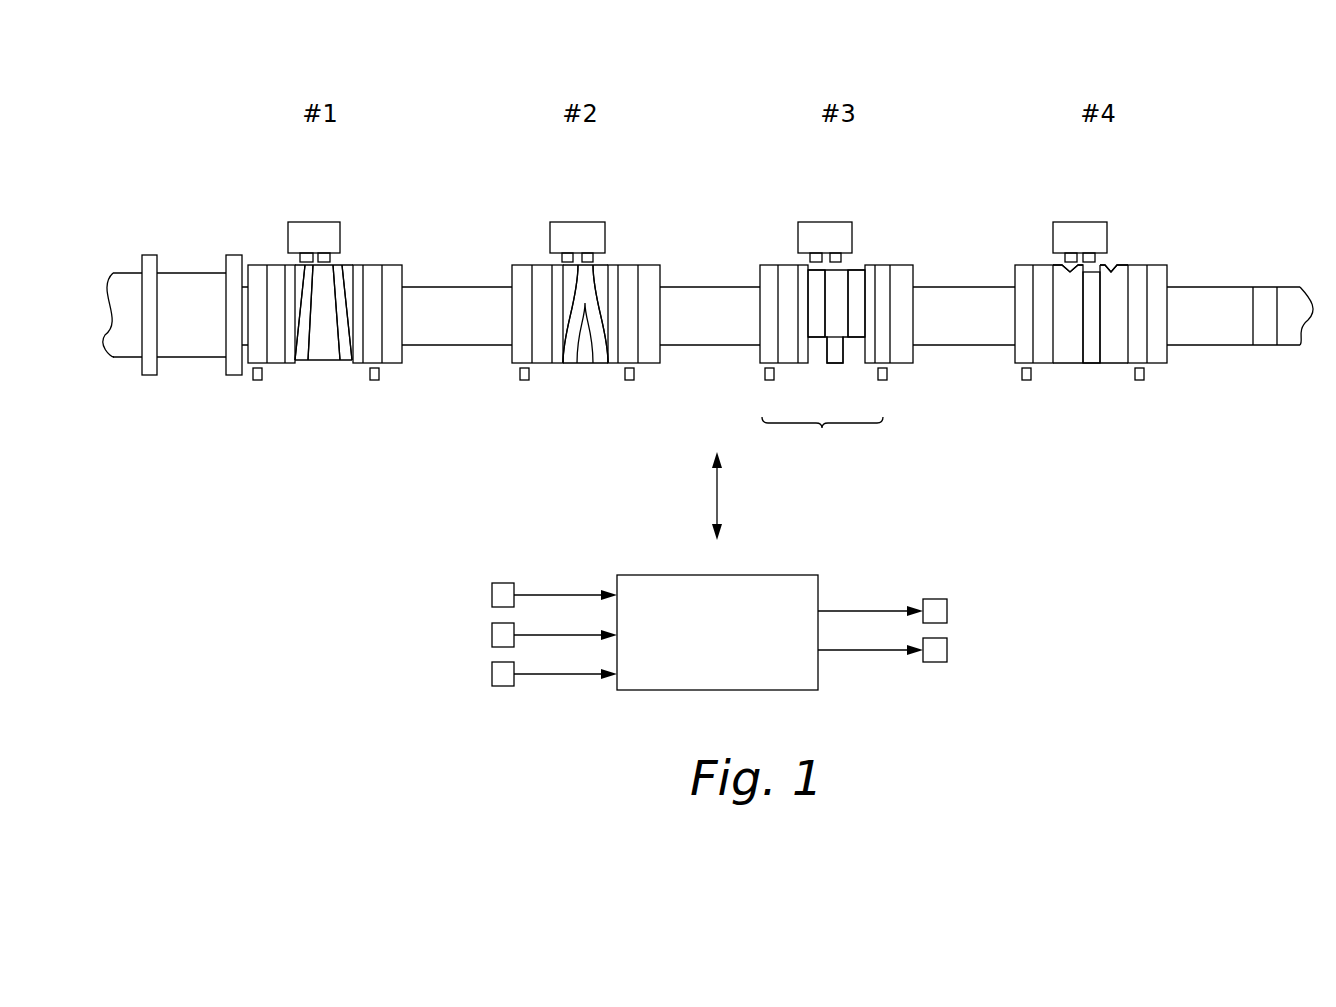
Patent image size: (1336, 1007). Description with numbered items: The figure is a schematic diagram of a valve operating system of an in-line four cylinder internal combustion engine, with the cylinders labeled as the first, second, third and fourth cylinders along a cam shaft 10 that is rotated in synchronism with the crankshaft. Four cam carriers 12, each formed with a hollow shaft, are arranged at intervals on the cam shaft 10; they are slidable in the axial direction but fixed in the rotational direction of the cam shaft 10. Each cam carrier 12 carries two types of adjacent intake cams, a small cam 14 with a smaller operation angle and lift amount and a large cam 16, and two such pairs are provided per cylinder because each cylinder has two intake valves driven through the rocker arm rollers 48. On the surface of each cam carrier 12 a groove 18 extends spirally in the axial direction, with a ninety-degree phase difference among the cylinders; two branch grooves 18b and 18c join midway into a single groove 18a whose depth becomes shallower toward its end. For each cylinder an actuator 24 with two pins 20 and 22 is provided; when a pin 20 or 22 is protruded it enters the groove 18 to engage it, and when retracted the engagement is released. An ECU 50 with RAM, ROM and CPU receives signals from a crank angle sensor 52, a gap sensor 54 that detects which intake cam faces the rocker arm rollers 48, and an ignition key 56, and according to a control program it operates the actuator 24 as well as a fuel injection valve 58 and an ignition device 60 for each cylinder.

The cam shaft 10 is at (1285, 287).
The cam carrier 12 is at (319, 366).
The intake cam 14 is at (232, 262).
The intake cam 16 is at (270, 262).
The groove 18 is at (822, 438).
The groove 18a is at (585, 292).
The groove 18b is at (300, 352).
The groove 18c is at (344, 350).
The pin 20 is at (304, 258).
The pin 22 is at (326, 258).
The actuator 24 is at (340, 226).
The rocker arm roller 48 is at (256, 381).
The ECU 50 is at (787, 575).
The crank angle sensor 52 is at (492, 600).
The gap sensor 54 is at (492, 640).
The ignition key 56 is at (492, 680).
The fuel injection valve 58 is at (947, 613).
The ignition device 60 is at (947, 652).